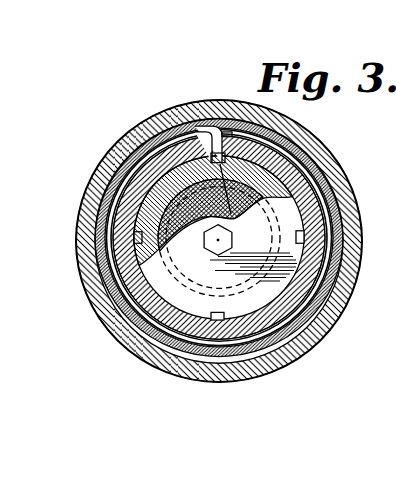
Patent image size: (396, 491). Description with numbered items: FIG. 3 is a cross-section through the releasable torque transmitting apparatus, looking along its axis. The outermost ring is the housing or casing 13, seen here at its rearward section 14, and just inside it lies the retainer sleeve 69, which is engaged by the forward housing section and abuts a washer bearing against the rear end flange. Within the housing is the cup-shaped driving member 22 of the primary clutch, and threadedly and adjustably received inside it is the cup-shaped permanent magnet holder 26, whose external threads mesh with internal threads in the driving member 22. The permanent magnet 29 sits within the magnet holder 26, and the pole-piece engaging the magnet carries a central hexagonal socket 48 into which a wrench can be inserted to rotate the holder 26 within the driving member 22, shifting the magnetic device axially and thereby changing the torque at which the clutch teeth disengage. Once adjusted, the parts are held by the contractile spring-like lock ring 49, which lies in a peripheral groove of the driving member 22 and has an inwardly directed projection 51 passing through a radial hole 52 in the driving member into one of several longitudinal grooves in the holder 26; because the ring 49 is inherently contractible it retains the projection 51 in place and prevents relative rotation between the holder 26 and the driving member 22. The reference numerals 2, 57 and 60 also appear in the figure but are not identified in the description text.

The valve assembly 2 is at (48, 177).
The housing 13 is at (137, 116).
The rearward housing section 14 is at (290, 126).
The driving member 22 is at (280, 167).
The magnet holder 26 is at (153, 278).
The permanent magnet 29 is at (175, 219).
The hexagonal socket 48 is at (228, 244).
The lock ring 49 is at (322, 196).
The inwardly directed projection 51 is at (231, 214).
The radial hole 52 is at (213, 152).
The tab 57 is at (303, 237).
The ring surface 60 is at (125, 197).
The retainer sleeve 69 is at (302, 154).